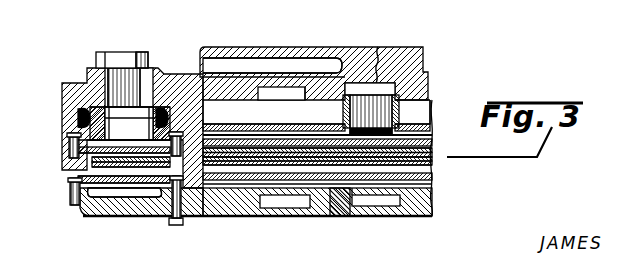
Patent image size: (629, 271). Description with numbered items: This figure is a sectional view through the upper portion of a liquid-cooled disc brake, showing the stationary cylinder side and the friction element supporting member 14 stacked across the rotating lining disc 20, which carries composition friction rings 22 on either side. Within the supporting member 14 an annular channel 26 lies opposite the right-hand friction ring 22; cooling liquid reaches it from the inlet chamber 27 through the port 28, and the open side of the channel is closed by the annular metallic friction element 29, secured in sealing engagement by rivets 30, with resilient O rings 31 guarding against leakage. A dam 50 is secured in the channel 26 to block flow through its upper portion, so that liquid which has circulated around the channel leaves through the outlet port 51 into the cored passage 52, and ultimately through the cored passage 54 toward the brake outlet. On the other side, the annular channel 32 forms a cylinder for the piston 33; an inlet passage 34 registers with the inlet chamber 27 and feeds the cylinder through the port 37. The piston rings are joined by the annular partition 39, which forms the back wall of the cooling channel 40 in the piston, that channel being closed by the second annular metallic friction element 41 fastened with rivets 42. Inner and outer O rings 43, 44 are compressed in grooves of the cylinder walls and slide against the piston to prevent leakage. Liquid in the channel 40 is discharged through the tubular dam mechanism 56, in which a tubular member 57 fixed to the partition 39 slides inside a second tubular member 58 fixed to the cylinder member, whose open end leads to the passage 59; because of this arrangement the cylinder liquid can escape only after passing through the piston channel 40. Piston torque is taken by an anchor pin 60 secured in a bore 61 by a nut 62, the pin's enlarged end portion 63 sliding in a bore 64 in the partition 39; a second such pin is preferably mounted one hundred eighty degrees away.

The friction element supporting member 14 is at (420, 220).
The lining disc 20 is at (434, 152).
The friction rings 22 is at (434, 136).
The channel 26 is at (434, 205).
The inlet chamber 27 is at (268, 210).
The port 28 is at (297, 216).
The annular metallic friction element 29 is at (434, 184).
The rivets 30 is at (80, 210).
The resilient O rings 31 is at (70, 190).
The annular channel 32 is at (274, 119).
The piston 33 is at (431, 110).
The inlet passage 34 is at (280, 88).
The port 37 is at (304, 101).
The annular partition 39 is at (220, 127).
The channel 40 is at (434, 119).
The second annular metallic friction element 41 is at (245, 127).
The rivets 42 is at (67, 145).
The inner O ring 43 is at (165, 112).
The outer O ring 44 is at (78, 116).
The dam 50 is at (338, 198).
The outlet port 51 is at (358, 198).
The cored passage 52 is at (378, 207).
The cored passage 54 is at (326, 62).
The tubular dam mechanism 56 is at (403, 106).
The tubular member 57 is at (371, 109).
The second tubular member 58 is at (314, 73).
The passage 59 is at (375, 50).
The anchor pin 60 is at (133, 98).
The bore 61 is at (131, 67).
The nut 62 is at (110, 52).
The enlarged end portion 63 is at (130, 123).
The bore 64 is at (162, 70).